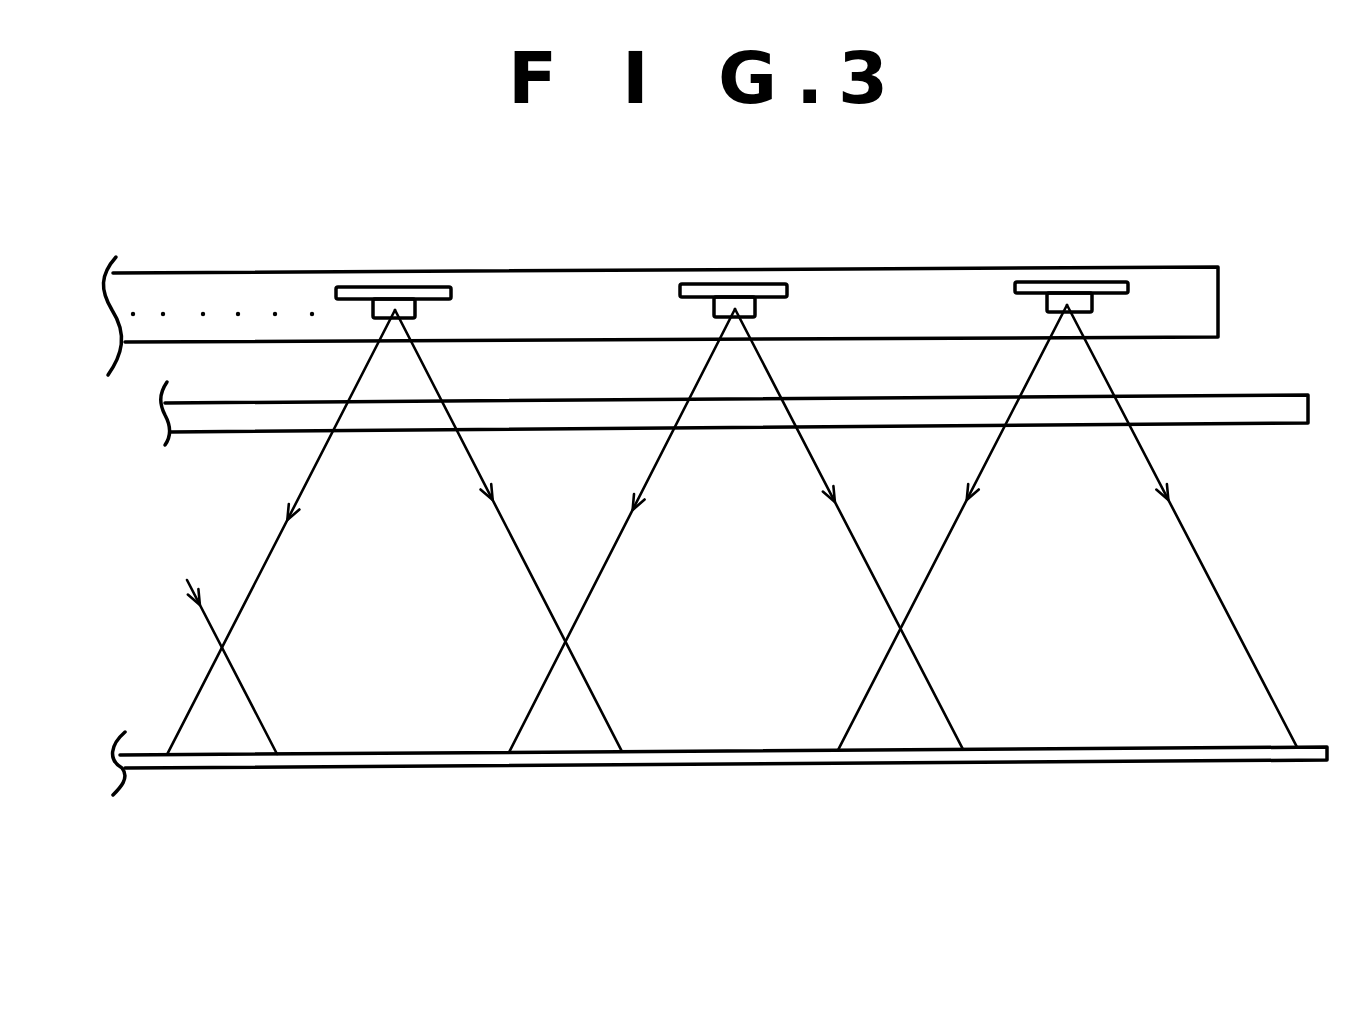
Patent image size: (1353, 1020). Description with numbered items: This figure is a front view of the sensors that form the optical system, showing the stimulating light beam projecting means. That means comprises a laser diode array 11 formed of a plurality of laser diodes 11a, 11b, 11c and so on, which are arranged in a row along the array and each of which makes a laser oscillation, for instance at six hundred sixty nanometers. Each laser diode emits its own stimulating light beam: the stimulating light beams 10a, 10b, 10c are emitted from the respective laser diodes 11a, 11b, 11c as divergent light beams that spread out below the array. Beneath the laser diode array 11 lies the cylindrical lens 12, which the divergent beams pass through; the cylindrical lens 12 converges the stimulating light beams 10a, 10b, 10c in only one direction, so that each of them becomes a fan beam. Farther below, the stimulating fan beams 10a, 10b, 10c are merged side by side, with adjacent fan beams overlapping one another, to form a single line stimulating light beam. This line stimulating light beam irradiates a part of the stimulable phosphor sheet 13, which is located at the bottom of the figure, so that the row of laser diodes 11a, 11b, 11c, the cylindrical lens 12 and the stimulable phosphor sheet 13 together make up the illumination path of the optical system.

The laser diode array 11 is at (878, 268).
The laser diode 11a is at (1072, 282).
The laser diode 11b is at (723, 283).
The laser diode 11c is at (387, 285).
The cylindrical lens 12 is at (1250, 395).
The stimulable phosphor sheet 13 is at (1130, 747).
The stimulating light beam 10a is at (917, 603).
The stimulating light beam 10b is at (583, 613).
The stimulating light beam 10c is at (245, 600).